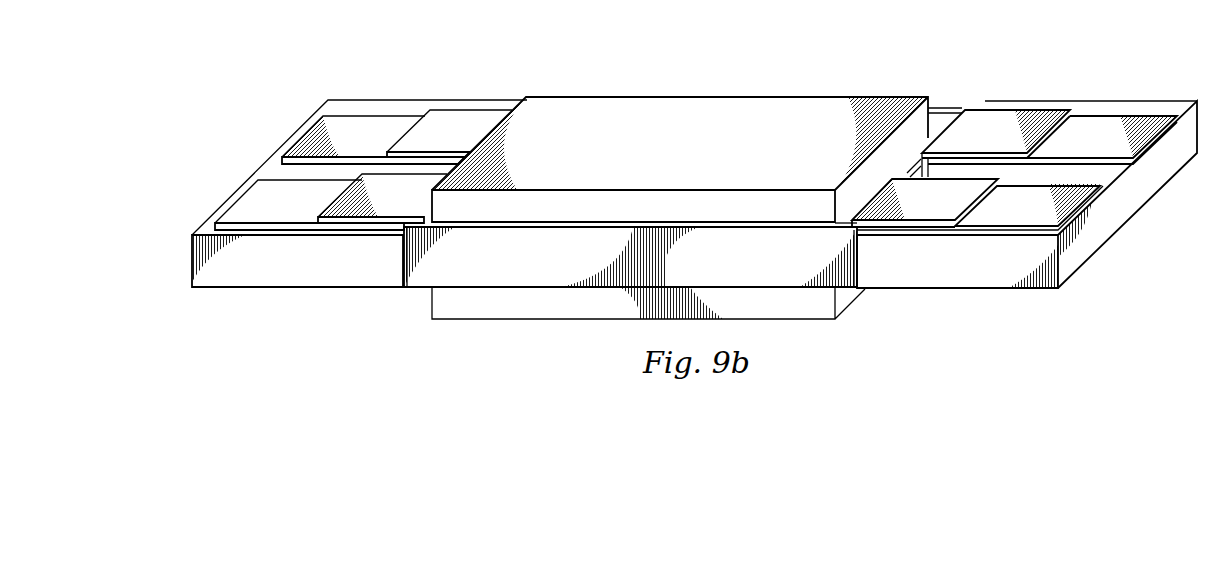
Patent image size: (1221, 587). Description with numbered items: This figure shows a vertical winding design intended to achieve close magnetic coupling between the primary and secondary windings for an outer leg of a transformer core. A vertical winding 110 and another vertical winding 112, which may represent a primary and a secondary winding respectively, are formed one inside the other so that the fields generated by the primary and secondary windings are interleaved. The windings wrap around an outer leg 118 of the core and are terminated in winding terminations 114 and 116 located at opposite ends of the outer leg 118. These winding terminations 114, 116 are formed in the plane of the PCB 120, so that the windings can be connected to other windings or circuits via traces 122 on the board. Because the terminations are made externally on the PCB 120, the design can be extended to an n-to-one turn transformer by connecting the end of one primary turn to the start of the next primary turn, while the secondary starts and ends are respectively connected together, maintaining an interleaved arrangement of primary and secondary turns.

The vertical winding 110 is at (946, 104).
The vertical winding 112 is at (530, 287).
The winding termination 114 is at (470, 115).
The winding termination 116 is at (1003, 127).
The outer leg 118 is at (667, 107).
The PCB 120 is at (1125, 205).
The trace 122 is at (257, 205).